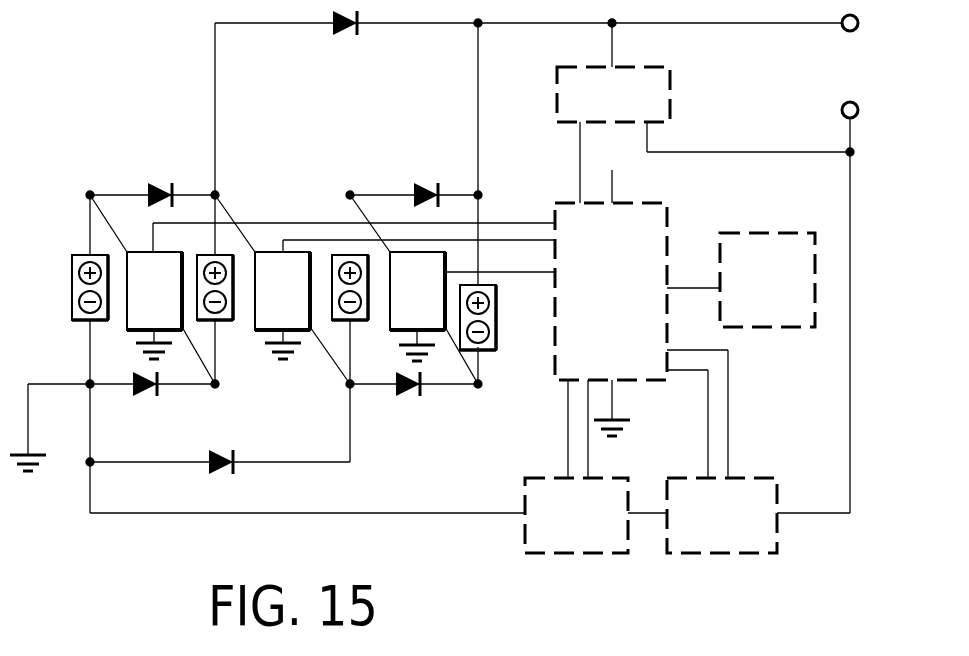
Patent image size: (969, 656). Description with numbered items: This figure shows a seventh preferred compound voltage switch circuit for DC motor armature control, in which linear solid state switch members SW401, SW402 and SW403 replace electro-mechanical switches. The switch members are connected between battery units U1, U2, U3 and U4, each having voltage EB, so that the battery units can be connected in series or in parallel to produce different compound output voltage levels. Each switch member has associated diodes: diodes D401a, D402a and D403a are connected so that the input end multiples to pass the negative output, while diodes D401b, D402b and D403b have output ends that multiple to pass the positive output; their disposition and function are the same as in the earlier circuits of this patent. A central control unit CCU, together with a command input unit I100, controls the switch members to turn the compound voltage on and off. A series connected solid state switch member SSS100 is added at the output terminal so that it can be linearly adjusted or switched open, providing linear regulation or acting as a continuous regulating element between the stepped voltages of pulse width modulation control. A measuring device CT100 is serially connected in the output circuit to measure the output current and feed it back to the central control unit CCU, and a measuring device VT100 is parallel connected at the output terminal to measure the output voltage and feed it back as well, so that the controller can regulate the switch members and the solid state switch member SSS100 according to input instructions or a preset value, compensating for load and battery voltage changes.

The diode D401a is at (341, 42).
The diode D401b is at (220, 479).
The diode D402a is at (152, 177).
The diode D402b is at (152, 402).
The diode D403a is at (414, 177).
The diode D403b is at (414, 403).
The linear solid state switch member SW401 is at (282, 305).
The linear solid state switch member SW402 is at (154, 305).
The linear solid state switch member SW403 is at (417, 306).
The battery unit U1 is at (79, 304).
The battery unit U2 is at (223, 304).
The battery unit U3 is at (357, 304).
The battery unit U4 is at (498, 319).
The measuring device VT100 is at (613, 94).
The central control unit CCU is at (611, 291).
The command input unit I100 is at (767, 280).
The measuring device CT100 is at (576, 515).
The solid state switch member SSS100 is at (722, 515).